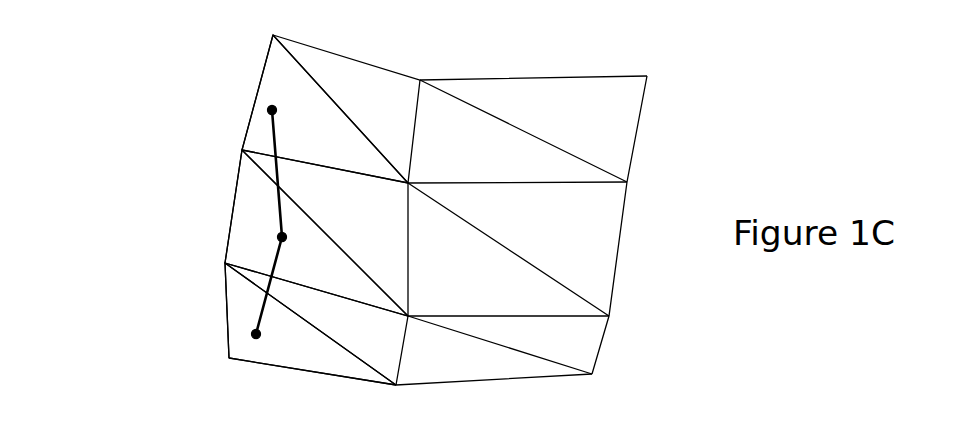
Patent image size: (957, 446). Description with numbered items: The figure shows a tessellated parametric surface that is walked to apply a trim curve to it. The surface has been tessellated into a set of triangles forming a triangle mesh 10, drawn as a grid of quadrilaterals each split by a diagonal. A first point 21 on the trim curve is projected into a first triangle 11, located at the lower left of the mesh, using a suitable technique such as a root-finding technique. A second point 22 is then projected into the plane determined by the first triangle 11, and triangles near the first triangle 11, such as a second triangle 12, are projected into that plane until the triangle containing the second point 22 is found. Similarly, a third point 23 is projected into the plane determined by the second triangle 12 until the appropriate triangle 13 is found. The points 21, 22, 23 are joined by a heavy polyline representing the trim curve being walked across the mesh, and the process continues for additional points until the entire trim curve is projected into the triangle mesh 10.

The triangle mesh 10 is at (541, 384).
The first triangle 11 is at (301, 373).
The second triangle 12 is at (236, 167).
The triangle 13 is at (266, 51).
The first point 21 is at (256, 345).
The second point 22 is at (280, 226).
The third point 23 is at (272, 101).